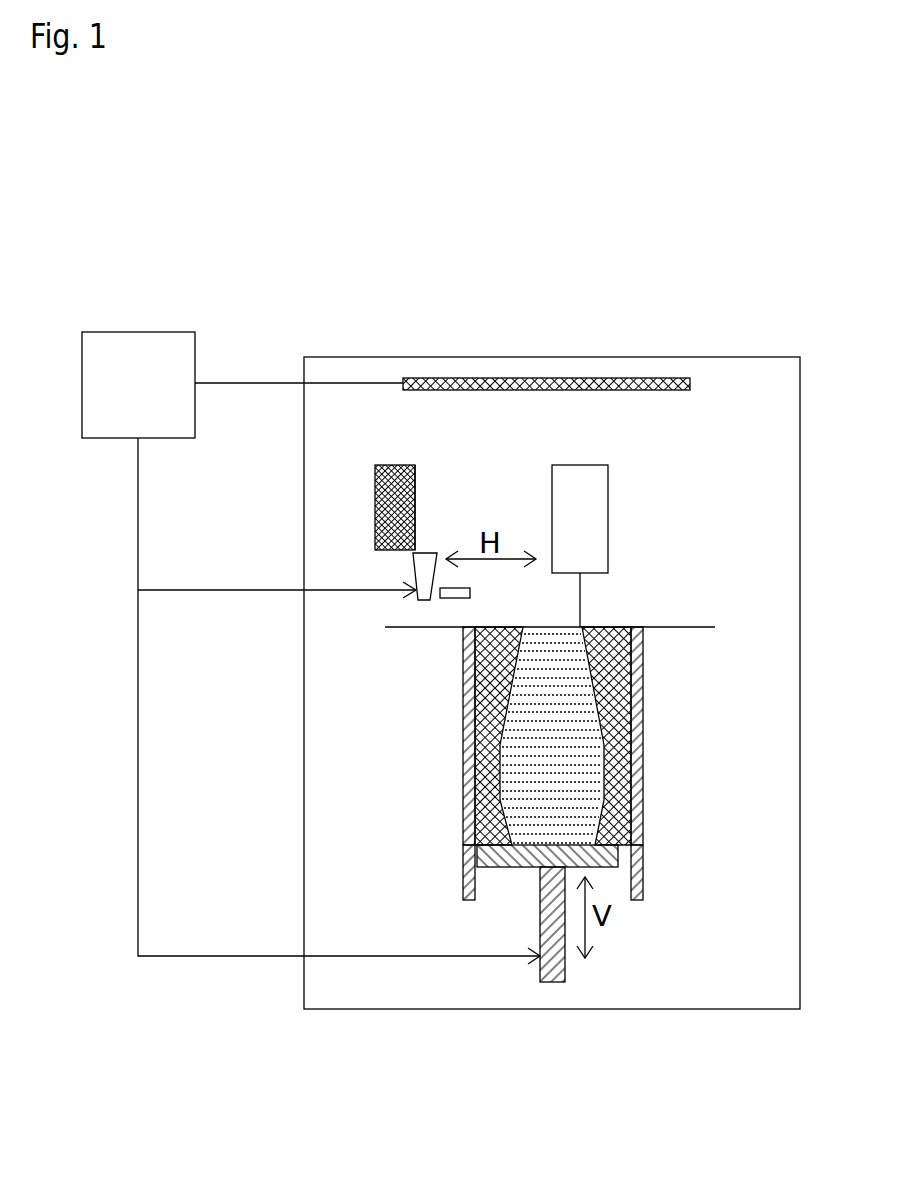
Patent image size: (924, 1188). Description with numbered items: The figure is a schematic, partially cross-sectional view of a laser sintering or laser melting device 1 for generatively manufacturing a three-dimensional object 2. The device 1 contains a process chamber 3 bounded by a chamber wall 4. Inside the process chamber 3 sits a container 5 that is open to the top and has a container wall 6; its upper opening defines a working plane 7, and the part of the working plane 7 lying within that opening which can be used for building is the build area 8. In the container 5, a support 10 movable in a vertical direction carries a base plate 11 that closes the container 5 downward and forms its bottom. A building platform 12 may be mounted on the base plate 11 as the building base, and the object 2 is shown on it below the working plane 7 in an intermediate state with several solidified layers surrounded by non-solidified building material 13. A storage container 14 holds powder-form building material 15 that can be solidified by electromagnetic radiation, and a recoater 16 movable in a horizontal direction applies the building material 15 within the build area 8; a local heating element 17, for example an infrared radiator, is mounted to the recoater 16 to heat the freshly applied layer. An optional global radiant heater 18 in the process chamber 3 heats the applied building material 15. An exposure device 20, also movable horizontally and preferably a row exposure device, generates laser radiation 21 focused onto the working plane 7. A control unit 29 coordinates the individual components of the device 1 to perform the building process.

The device 1 is at (740, 325).
The object 2 is at (643, 674).
The process chamber 3 is at (380, 748).
The chamber wall 4 is at (304, 465).
The container 5 is at (648, 818).
The container wall 6 is at (643, 758).
The working plane 7 is at (672, 627).
The build area 8 is at (612, 627).
The support 10 is at (528, 868).
The base plate 11 is at (463, 873).
The building platform 12 is at (470, 840).
The building material 13 is at (463, 670).
The storage container 14 is at (392, 465).
The building material 15 is at (415, 505).
The recoater 16 is at (418, 577).
The local heating element 17 is at (468, 598).
The global radiant heater 18 is at (660, 390).
The exposure device 20 is at (580, 540).
The laser radiation 21 is at (583, 585).
The control unit 29 is at (311, 648).